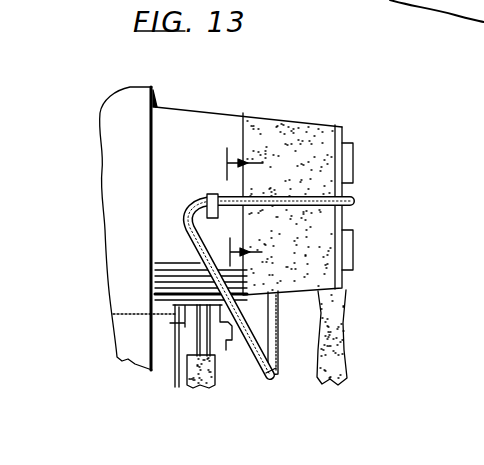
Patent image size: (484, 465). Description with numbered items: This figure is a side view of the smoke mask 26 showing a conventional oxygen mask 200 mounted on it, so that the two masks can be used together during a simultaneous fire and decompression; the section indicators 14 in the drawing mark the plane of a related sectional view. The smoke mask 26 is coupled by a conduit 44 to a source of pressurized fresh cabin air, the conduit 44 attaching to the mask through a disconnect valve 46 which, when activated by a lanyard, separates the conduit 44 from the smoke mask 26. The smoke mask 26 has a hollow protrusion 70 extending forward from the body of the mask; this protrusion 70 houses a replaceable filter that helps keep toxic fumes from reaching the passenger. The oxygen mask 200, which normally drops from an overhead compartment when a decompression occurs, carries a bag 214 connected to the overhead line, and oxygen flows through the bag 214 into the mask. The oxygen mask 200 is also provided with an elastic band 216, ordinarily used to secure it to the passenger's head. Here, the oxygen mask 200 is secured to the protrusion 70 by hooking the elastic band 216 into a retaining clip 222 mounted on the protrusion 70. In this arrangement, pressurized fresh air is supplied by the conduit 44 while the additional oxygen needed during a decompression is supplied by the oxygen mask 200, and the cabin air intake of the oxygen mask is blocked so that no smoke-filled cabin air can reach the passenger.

The section line 14- 14 is at (263, 208).
The smoke mask 26 is at (109, 286).
The conduit 44 is at (467, 0).
The disconnect valve 46 is at (224, 357).
The hollow protrusion 70 is at (198, 112).
The oxygen mask 200 is at (302, 119).
The bag 214 is at (338, 312).
The elastic band 216 is at (278, 341).
The retaining clip 222 is at (200, 197).